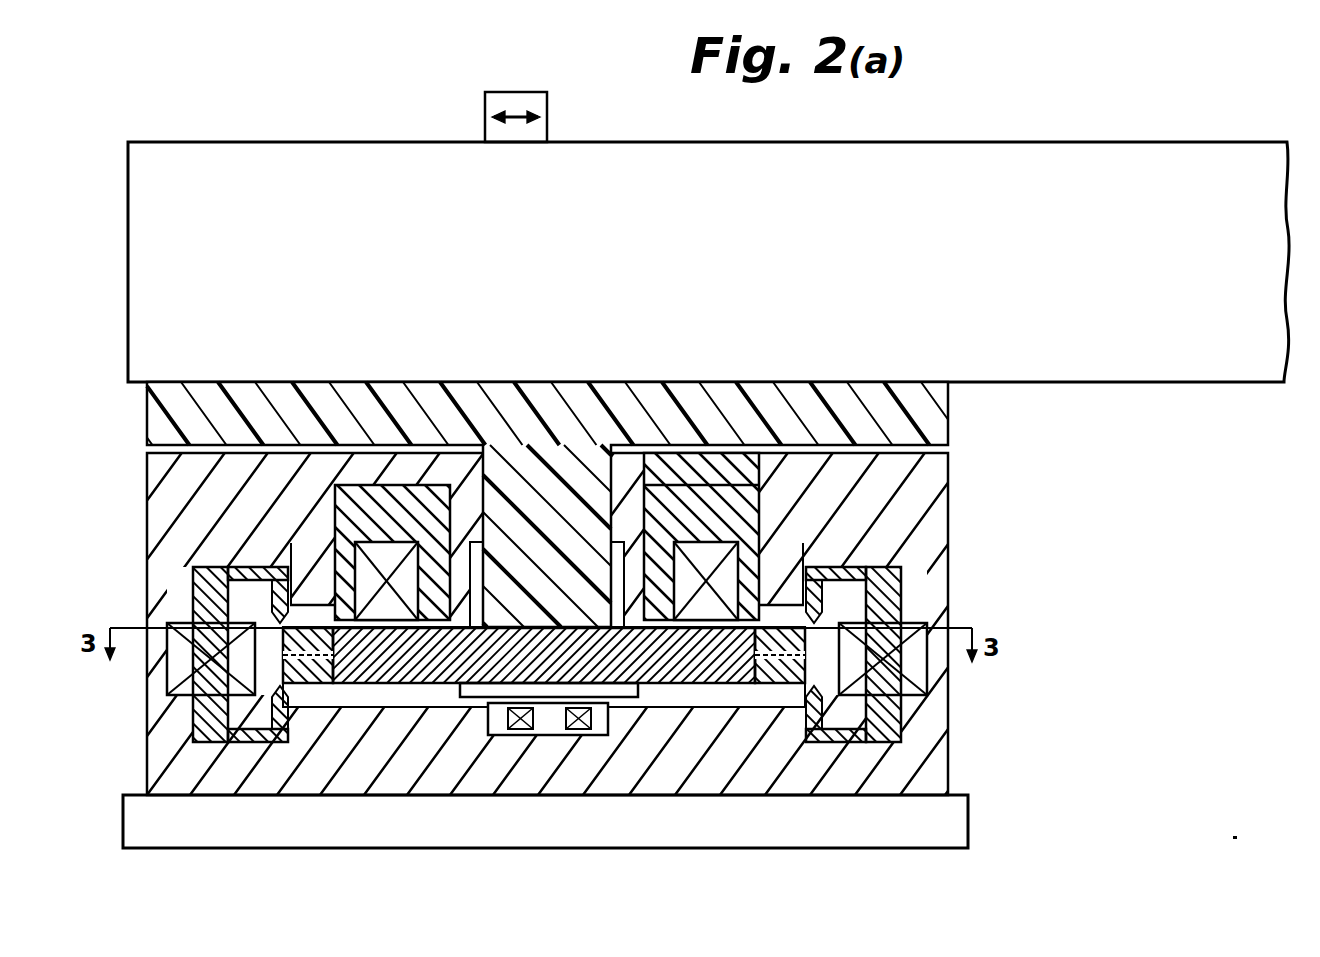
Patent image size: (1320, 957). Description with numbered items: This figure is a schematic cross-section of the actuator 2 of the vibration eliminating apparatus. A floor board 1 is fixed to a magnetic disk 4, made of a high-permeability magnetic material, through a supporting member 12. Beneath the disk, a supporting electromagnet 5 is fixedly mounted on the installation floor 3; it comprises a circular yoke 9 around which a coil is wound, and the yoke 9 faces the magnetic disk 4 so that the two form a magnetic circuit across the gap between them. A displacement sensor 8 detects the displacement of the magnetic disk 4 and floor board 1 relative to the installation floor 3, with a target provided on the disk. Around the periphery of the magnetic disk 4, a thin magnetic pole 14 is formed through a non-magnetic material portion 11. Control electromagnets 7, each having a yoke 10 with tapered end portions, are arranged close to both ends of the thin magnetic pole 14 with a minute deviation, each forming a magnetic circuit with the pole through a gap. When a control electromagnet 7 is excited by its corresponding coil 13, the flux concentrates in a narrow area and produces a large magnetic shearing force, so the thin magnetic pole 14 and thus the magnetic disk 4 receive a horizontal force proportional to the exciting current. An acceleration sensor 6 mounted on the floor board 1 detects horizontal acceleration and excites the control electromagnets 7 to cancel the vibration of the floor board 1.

The floor board 1 is at (1010, 372).
The actuator 2 is at (947, 675).
The installation floor 3 is at (893, 838).
The magnetic disk 4 is at (395, 678).
The supporting electromagnet 5 is at (687, 493).
The acceleration sensor 6 is at (485, 101).
The control electromagnet 7 is at (920, 693).
The displacement sensor 8 is at (555, 736).
The circular yoke 9 is at (643, 553).
The yoke 10 is at (813, 574).
The non-magnetic material portion 11 is at (778, 678).
The supporting member 12 is at (521, 450).
The coil 13 is at (917, 618).
The thin magnetic pole 14 is at (792, 680).